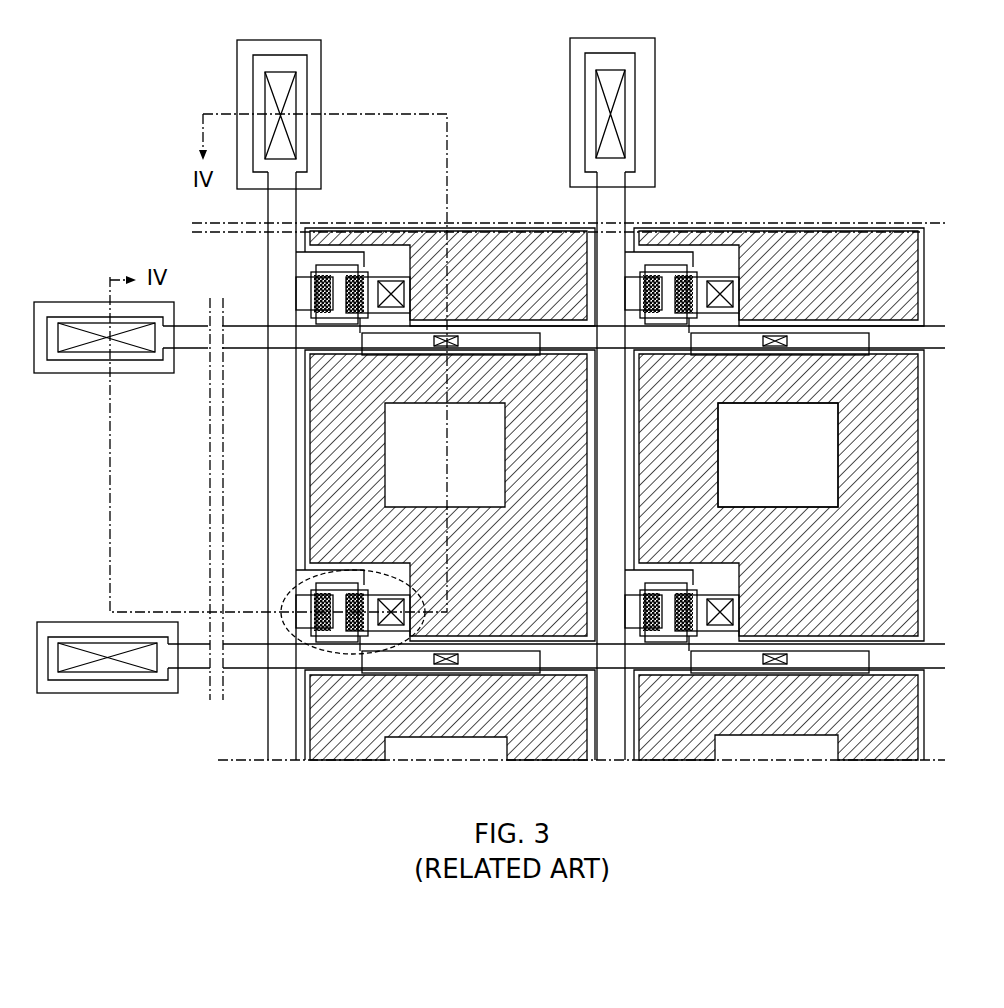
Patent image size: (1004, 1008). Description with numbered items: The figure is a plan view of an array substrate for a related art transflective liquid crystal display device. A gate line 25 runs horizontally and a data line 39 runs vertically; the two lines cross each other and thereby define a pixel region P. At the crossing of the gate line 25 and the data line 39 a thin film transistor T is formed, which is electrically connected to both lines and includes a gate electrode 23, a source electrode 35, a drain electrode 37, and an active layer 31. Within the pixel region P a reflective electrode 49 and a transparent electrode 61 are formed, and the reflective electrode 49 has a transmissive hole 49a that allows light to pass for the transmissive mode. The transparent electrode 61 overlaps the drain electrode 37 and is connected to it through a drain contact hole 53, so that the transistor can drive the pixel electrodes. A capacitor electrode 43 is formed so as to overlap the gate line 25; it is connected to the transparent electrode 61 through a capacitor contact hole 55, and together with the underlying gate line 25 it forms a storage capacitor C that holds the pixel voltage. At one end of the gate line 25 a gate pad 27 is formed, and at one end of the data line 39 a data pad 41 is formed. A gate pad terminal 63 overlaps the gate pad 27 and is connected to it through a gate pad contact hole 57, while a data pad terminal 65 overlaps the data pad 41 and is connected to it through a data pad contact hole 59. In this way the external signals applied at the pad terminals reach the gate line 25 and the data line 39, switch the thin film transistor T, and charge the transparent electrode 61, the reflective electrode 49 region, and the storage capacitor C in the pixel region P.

The gate electrode 23 is at (358, 575).
The gate line 25 is at (562, 652).
The gate pad 27 is at (155, 362).
The active layer 31 is at (344, 627).
The source electrode 35 is at (322, 642).
The drain electrode 37 is at (396, 633).
The data line 39 is at (266, 520).
The data pad 41 is at (308, 91).
The capacitor electrode 43 is at (835, 331).
The reflective electrode 49 is at (303, 394).
The transmissive hole 49a is at (838, 490).
The drain contact hole 53 is at (392, 597).
The capacitor contact hole 55 is at (784, 333).
The gate pad contact hole 57 is at (74, 357).
The data pad contact hole 59 is at (262, 87).
The transparent electrode 61 is at (303, 456).
The gate pad terminal 63 is at (80, 302).
The data pad terminal 65 is at (322, 155).
The storage capacitor C is at (882, 338).
The pixel region P is at (874, 401).
The thin film transistor T is at (331, 643).